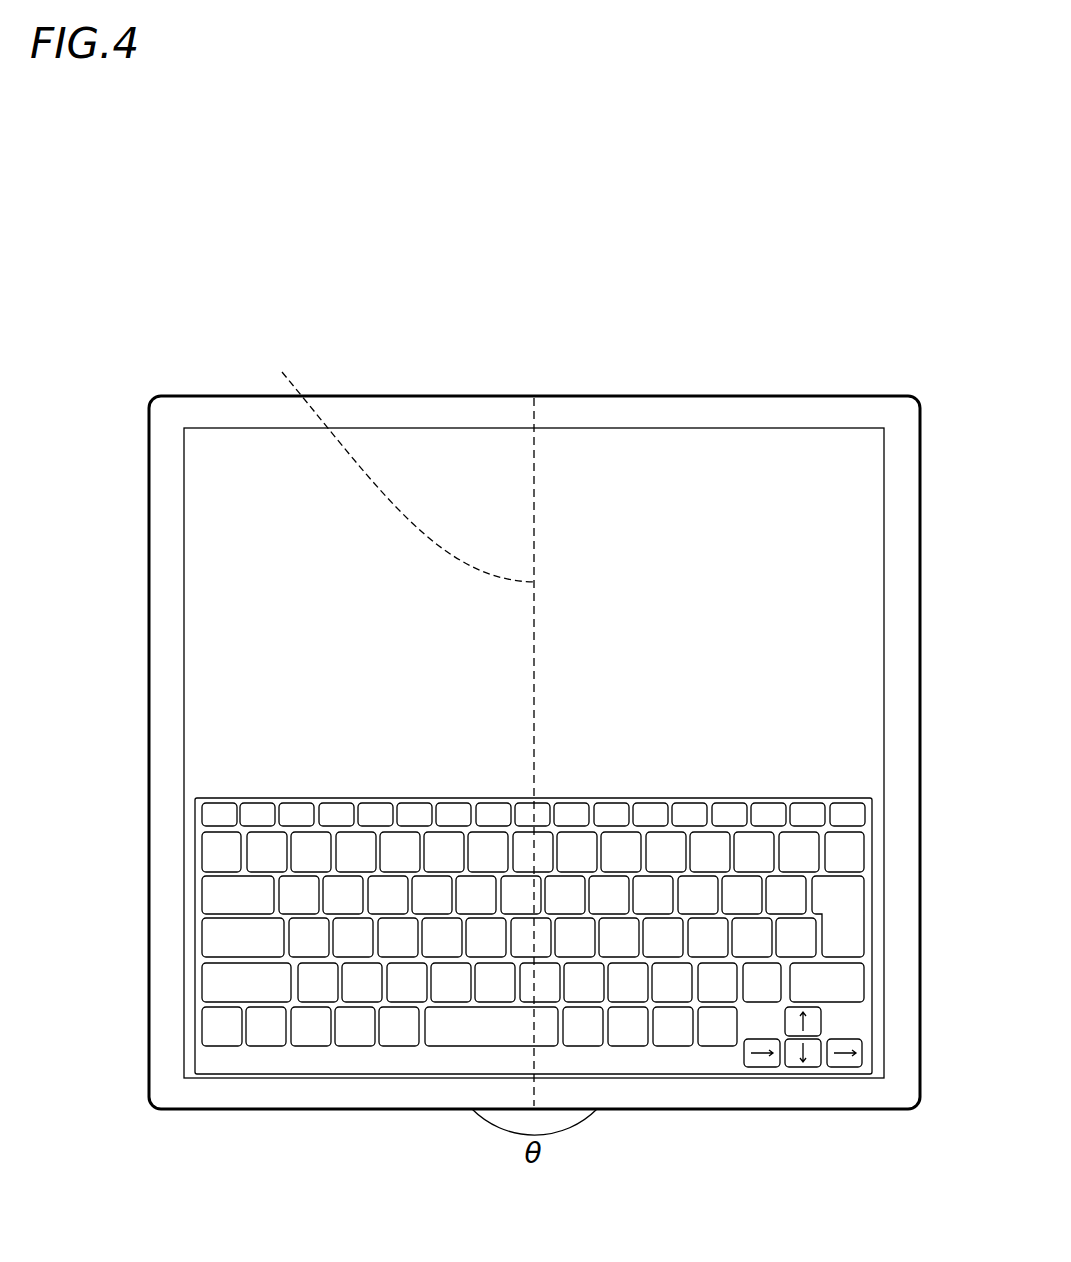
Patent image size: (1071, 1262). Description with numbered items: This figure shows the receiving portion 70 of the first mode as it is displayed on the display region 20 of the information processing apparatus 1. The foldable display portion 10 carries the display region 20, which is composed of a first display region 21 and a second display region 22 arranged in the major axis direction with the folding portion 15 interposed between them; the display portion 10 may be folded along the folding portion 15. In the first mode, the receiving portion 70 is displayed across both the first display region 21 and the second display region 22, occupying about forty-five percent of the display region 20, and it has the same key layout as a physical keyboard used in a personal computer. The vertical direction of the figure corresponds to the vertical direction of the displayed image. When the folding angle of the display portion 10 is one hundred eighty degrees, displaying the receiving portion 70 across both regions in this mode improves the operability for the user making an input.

The information processing apparatus 1 is at (880, 241).
The display portion 10 is at (837, 396).
The folding portion 15 is at (398, 462).
The display region 20 is at (420, 328).
The first display region 21 is at (447, 493).
The second display region 22 is at (622, 493).
The receiving portion 70 is at (257, 778).